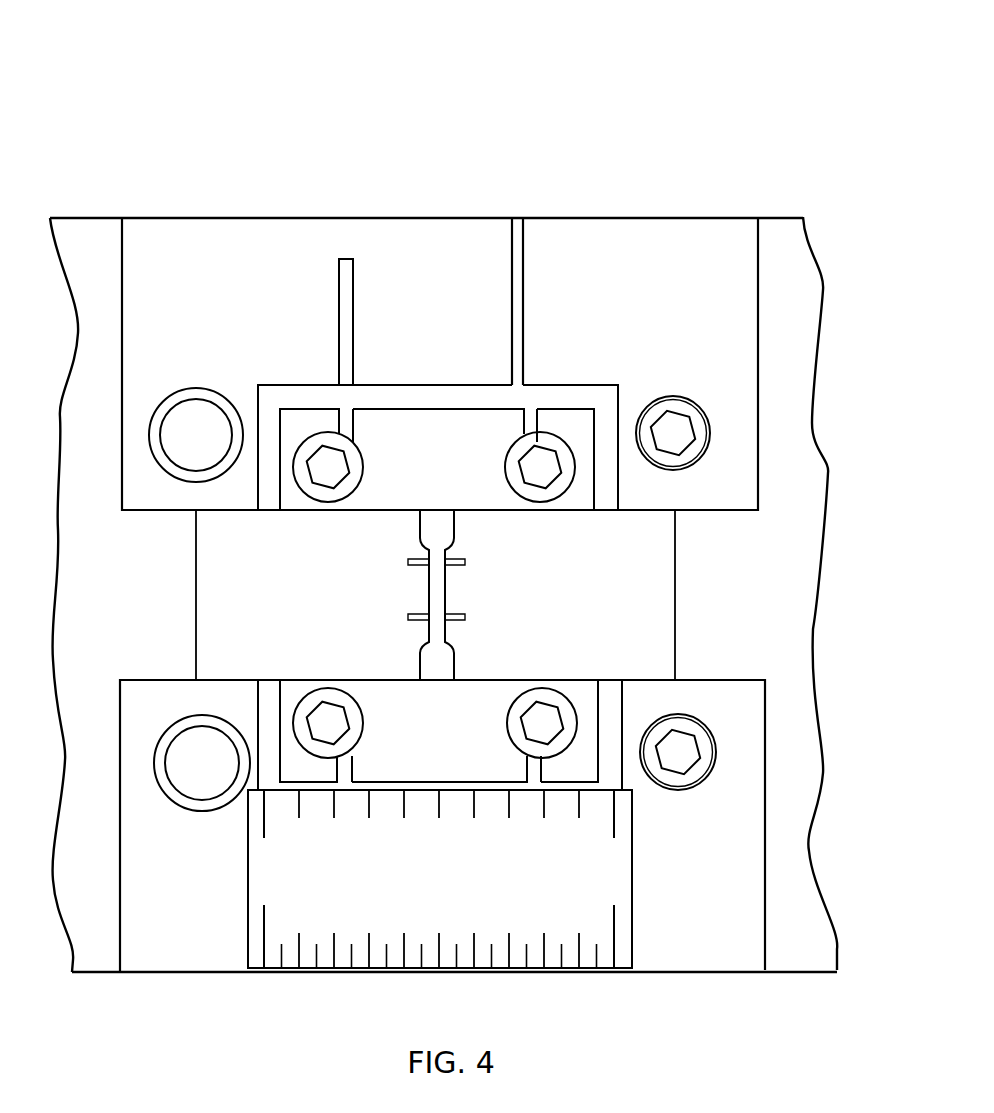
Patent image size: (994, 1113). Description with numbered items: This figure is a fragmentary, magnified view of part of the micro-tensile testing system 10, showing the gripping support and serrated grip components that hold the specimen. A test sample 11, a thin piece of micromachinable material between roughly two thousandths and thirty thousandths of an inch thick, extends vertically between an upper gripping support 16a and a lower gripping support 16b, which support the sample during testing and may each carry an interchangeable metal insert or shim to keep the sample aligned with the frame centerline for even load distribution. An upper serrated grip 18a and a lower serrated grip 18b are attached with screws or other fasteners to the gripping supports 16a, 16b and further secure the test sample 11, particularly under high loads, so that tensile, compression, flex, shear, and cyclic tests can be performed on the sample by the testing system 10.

The micro-tensile testing system 10 is at (812, 97).
The upper gripping support 16a is at (253, 248).
The lower gripping support 16b is at (183, 943).
The upper serrated grip 18a is at (438, 432).
The lower serrated grip 18b is at (443, 760).
The test sample 11 is at (438, 600).